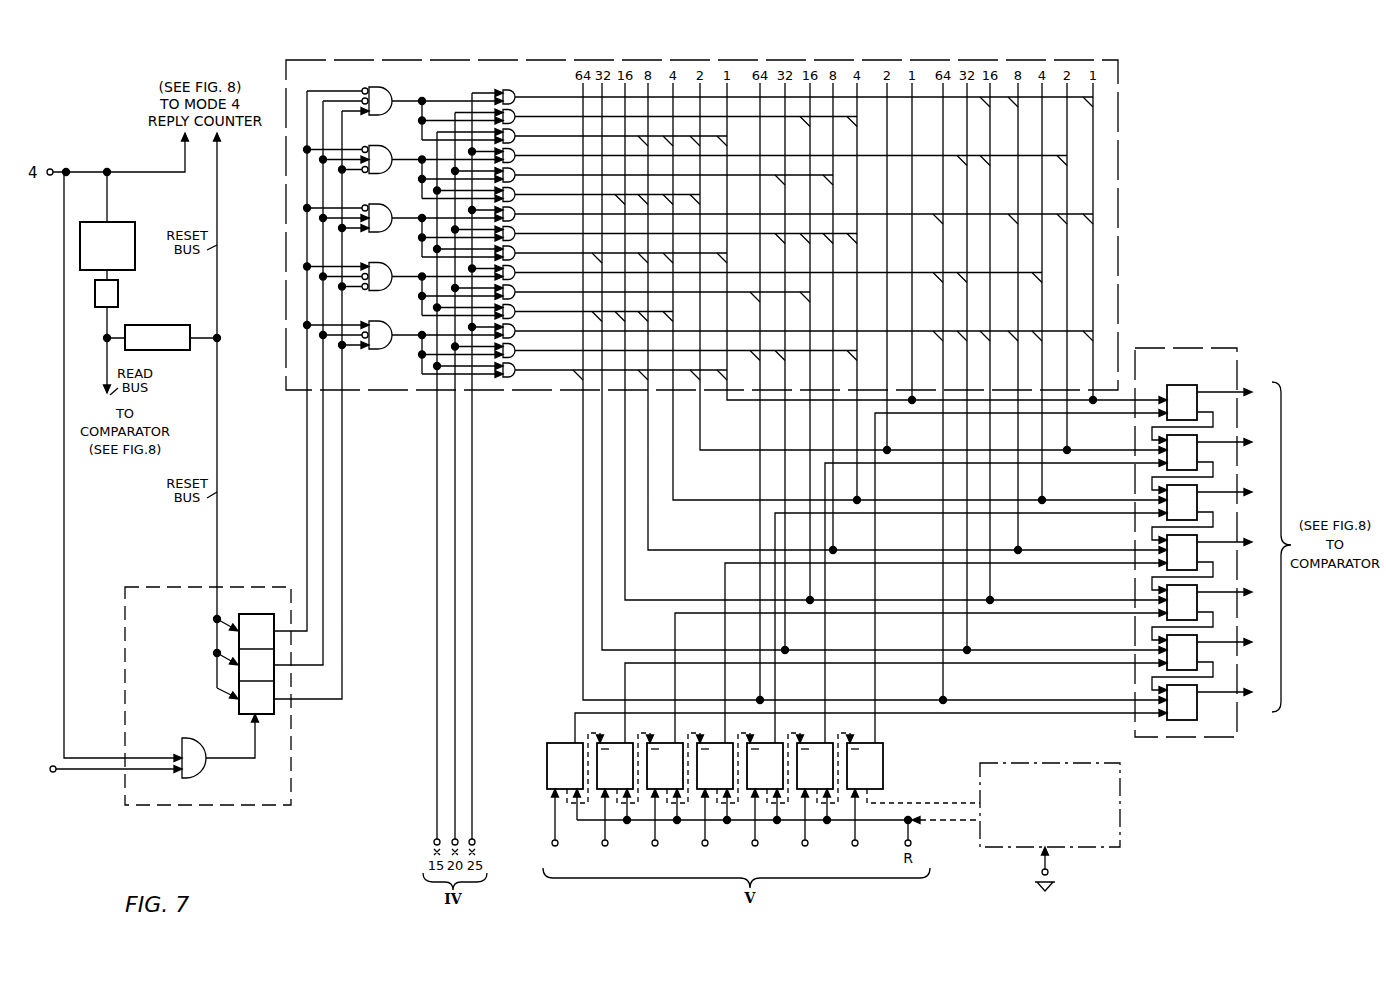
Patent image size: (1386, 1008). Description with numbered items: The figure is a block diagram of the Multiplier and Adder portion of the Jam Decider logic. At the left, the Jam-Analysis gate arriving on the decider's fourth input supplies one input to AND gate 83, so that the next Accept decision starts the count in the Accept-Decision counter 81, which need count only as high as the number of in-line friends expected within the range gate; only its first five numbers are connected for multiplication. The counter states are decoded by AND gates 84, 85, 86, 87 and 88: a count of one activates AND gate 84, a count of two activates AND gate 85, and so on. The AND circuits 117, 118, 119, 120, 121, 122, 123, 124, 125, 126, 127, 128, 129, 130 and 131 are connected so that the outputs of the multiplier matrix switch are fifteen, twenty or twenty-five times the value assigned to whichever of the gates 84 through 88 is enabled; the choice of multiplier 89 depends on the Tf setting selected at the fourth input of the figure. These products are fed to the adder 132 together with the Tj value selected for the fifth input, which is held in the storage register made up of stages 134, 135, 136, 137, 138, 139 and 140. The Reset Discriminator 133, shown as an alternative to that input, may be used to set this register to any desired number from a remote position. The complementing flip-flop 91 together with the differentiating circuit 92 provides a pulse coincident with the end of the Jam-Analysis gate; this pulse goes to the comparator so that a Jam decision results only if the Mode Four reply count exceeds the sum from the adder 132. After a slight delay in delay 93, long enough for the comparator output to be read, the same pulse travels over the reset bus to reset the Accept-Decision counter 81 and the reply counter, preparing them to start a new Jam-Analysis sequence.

The Accept-Decision counter 81 is at (125, 613).
The AND gate 83 is at (207, 752).
The AND gate 84 is at (388, 96).
The AND gate 85 is at (388, 154).
The AND gate 86 is at (388, 212).
The AND gate 87 is at (388, 271).
The AND gate 88 is at (388, 329).
The multiplier 89 is at (553, 58).
The complementing flip-flop 91 is at (117, 222).
The differentiating circuit 92 is at (118, 290).
The delay 93 is at (162, 325).
The AND circuit 117 is at (782, 94).
The AND circuit 118 is at (656, 114).
The AND circuit 119 is at (582, 133).
The AND circuit 120 is at (768, 153).
The AND circuit 121 is at (643, 172).
The AND circuit 122 is at (567, 192).
The AND circuit 123 is at (781, 211).
The AND circuit 124 is at (655, 231).
The AND circuit 125 is at (581, 250).
The AND circuit 126 is at (756, 270).
The AND circuit 127 is at (631, 289).
The AND circuit 128 is at (554, 309).
The AND circuit 129 is at (781, 328).
The AND circuit 130 is at (655, 348).
The AND circuit 131 is at (581, 367).
The adder 132 is at (1240, 362).
The Reset Discriminator 133 is at (1048, 763).
The register stage 134 is at (870, 743).
The register stage 135 is at (820, 743).
The register stage 136 is at (770, 743).
The register stage 137 is at (720, 743).
The register stage 138 is at (670, 743).
The register stage 139 is at (620, 743).
The register stage 140 is at (559, 743).